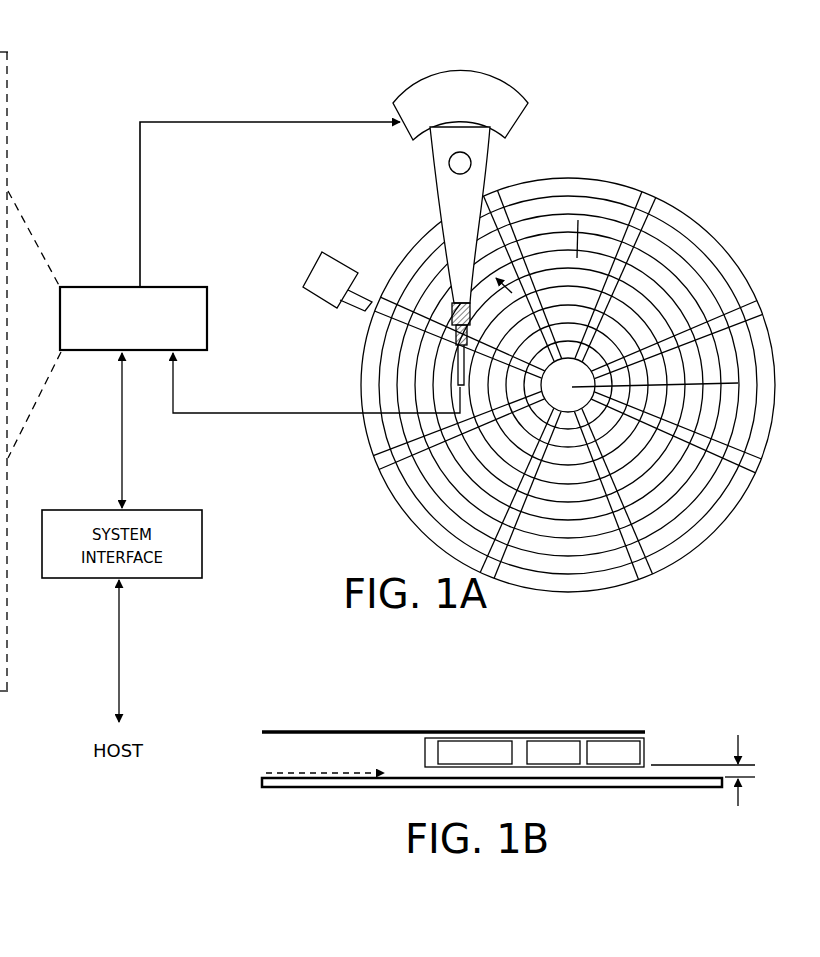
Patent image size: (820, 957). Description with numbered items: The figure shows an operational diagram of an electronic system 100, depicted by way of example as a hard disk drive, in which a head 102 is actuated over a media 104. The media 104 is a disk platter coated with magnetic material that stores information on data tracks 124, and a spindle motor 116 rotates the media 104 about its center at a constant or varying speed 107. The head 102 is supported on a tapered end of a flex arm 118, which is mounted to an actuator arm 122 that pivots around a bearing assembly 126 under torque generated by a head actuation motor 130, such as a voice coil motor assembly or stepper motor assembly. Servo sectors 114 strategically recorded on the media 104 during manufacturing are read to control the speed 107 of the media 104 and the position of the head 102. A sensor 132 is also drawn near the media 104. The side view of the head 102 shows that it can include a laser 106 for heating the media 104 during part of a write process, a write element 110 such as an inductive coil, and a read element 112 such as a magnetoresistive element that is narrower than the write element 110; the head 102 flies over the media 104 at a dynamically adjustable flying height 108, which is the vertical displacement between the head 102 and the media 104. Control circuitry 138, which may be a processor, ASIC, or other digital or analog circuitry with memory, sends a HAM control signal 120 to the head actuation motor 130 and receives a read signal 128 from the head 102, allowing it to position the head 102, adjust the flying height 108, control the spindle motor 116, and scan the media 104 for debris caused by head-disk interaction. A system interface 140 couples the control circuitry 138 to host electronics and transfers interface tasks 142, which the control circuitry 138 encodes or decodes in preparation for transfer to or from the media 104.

In FIG. 1A, the electronic system 100 is at (703, 84).
In FIG. 1A, the head 102 is at (370, 412).
In FIG. 1B, the head 102 is at (648, 750).
In FIG. 1A, the media 104 is at (707, 216).
In FIG. 1B, the media 104 is at (350, 787).
In FIG. 1B, the laser 106 is at (492, 737).
In FIG. 1A, the speed 107 is at (578, 220).
In FIG. 1B, the speed 107 is at (305, 770).
In FIG. 1B, the flying height 108 is at (745, 735).
In FIG. 1B, the write element 110 is at (570, 738).
In FIG. 1B, the read element 112 is at (638, 738).
In FIG. 1A, the servo sectors 114 is at (641, 566).
In FIG. 1A, the spindle motor 116 is at (738, 382).
In FIG. 1A, the flex arm 118 is at (400, 310).
In FIG. 1B, the flex arm 118 is at (378, 730).
In FIG. 1A, the HAM control signal 120 is at (142, 200).
In FIG. 1A, the actuator arm 122 is at (460, 217).
In FIG. 1A, the data tracks 124 is at (459, 503).
In FIG. 1A, the bearing assembly 126 is at (460, 166).
In FIG. 1A, the read signal 128 is at (255, 414).
In FIG. 1A, the head actuation motor 130 is at (492, 100).
In FIG. 1A, the sensor 132 is at (312, 289).
In FIG. 1A, the control circuitry 138 is at (200, 300).
In FIG. 1A, the system interface 140 is at (137, 580).
In FIG. 1A, the interface tasks 142 is at (125, 420).